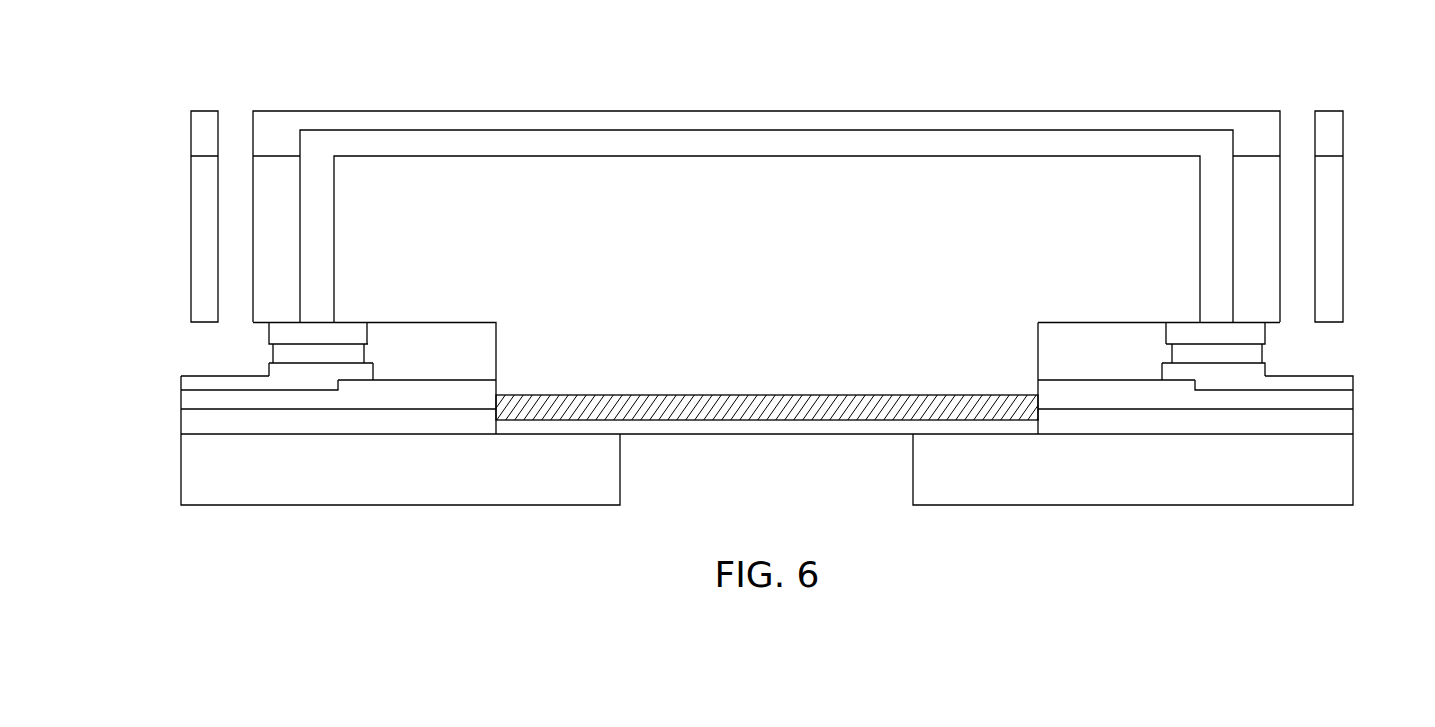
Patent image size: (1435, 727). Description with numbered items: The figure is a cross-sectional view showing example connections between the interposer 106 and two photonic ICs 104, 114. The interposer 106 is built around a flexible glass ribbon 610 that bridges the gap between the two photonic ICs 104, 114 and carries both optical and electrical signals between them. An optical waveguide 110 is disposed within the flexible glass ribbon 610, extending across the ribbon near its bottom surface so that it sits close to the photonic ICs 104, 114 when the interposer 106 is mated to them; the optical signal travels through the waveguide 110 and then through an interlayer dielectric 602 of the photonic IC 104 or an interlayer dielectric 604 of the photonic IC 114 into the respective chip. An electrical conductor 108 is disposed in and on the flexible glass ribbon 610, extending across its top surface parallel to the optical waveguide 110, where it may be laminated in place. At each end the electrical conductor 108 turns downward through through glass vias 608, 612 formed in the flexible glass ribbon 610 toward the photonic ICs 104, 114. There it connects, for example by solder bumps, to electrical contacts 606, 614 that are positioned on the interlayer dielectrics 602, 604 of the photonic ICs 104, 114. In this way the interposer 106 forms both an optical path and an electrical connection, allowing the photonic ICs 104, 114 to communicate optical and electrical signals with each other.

The photonic IC 104 is at (392, 506).
The photonic IC 114 is at (1053, 507).
The optical waveguide 110 is at (770, 402).
The interposer 106 is at (897, 108).
The electrical conductor 108 is at (445, 146).
The flexible glass ribbon 610 is at (728, 188).
The through glass via 608 is at (316, 208).
The through glass via 612 is at (1218, 220).
The electrical contact 606 is at (263, 354).
The electrical contact 614 is at (1267, 352).
The interlayer dielectric 602 is at (203, 418).
The interlayer dielectric 604 is at (1328, 419).